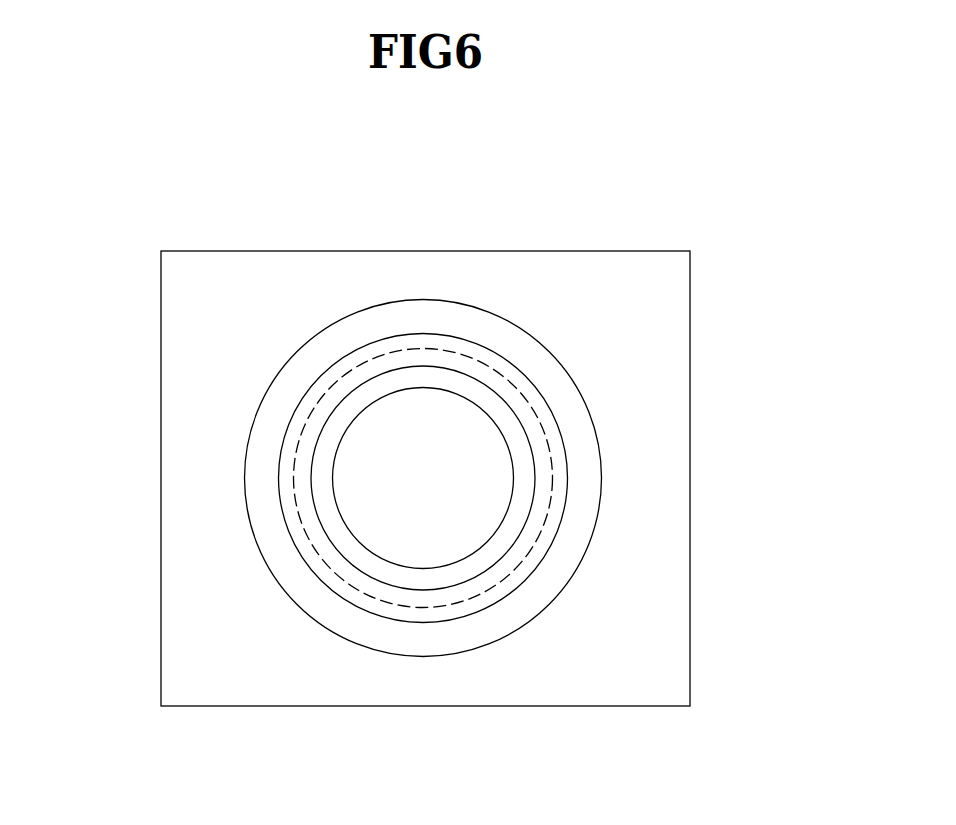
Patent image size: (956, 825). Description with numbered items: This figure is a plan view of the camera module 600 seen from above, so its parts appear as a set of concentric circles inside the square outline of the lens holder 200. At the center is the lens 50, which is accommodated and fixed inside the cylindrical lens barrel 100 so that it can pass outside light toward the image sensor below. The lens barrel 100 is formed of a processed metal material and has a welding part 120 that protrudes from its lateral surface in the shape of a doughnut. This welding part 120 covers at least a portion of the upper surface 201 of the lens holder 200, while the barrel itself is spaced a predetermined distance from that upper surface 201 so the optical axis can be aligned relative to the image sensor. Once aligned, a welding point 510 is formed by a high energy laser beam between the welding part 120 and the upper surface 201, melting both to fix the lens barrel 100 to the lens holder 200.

The camera module 600 is at (628, 218).
The lens holder 200 is at (658, 320).
The upper surface 201 is at (257, 460).
The welding part 120 is at (290, 518).
The welding point 510 is at (351, 370).
The lens barrel 100 is at (545, 495).
The lens 50 is at (407, 440).